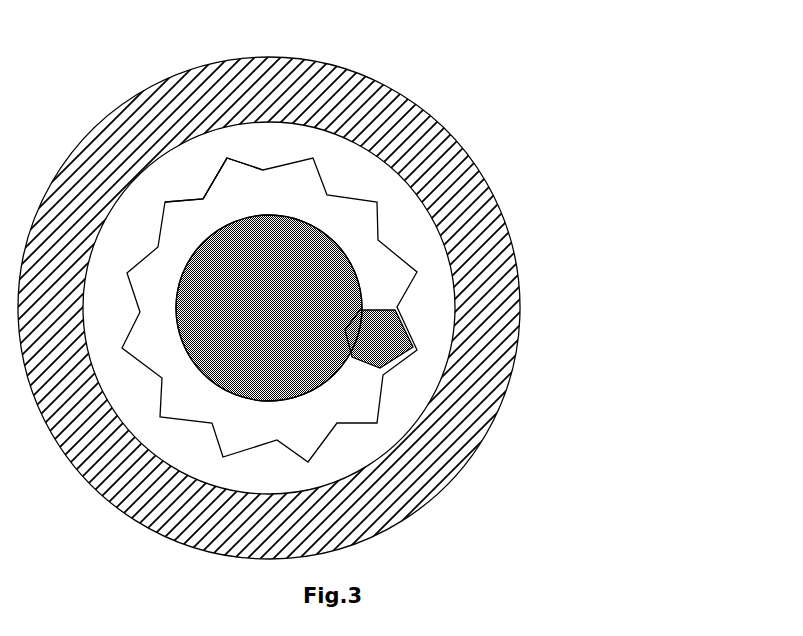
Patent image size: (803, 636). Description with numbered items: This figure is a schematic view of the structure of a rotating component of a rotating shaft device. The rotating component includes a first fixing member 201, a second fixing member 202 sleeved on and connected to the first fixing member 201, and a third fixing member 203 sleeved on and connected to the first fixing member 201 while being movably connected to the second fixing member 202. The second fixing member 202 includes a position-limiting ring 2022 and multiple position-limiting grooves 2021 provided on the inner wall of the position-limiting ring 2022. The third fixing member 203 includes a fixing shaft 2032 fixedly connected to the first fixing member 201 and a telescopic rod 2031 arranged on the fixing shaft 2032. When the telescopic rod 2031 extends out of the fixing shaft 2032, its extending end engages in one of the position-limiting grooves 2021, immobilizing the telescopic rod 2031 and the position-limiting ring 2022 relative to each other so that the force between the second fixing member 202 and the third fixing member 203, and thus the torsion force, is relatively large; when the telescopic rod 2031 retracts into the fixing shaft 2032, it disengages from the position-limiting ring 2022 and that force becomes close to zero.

The first fixing member 201 is at (412, 84).
The second fixing member 202 is at (409, 194).
The position-limiting groove 2021 is at (241, 162).
The position-limiting ring 2022 is at (180, 162).
The third fixing member 203 is at (363, 280).
The telescopic rod 2031 is at (399, 330).
The fixing shaft 2032 is at (318, 367).